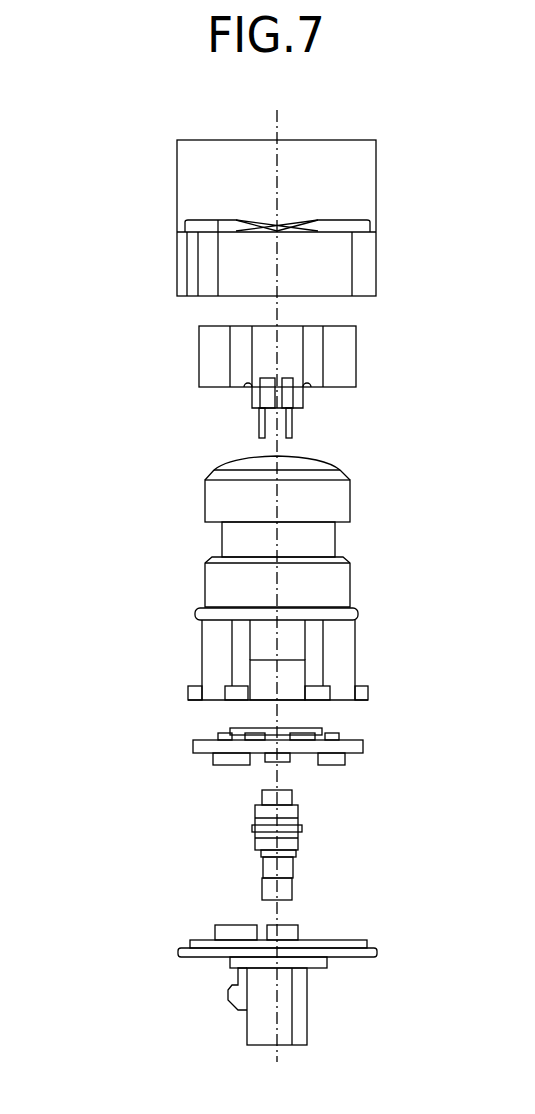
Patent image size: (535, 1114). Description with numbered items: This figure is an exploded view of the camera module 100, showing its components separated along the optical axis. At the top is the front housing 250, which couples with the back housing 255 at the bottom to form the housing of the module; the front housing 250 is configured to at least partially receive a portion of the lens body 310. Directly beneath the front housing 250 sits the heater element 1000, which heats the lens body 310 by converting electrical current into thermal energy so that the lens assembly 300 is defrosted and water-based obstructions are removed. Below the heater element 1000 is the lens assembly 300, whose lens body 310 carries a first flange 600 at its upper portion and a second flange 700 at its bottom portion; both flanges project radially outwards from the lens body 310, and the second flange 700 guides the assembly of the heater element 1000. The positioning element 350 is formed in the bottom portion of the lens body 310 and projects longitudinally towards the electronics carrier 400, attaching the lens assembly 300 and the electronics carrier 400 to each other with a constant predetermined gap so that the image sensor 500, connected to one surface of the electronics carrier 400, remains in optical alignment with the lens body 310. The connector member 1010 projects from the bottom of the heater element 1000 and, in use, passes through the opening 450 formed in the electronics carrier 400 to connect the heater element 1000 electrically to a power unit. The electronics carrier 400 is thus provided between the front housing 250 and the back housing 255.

The camera module 100 is at (148, 513).
The front housing 250 is at (398, 243).
The heater element 1000 is at (373, 353).
The lens assembly 300 is at (340, 511).
The lens body 310 is at (313, 460).
The first flange 600 is at (358, 617).
The positioning element 350 is at (211, 684).
The second flange 700 is at (368, 693).
The electronics carrier 400 is at (291, 753).
The image sensor 500 is at (232, 730).
The opening 450 is at (262, 765).
The connector member 1010 is at (323, 850).
The back housing 255 is at (322, 1018).